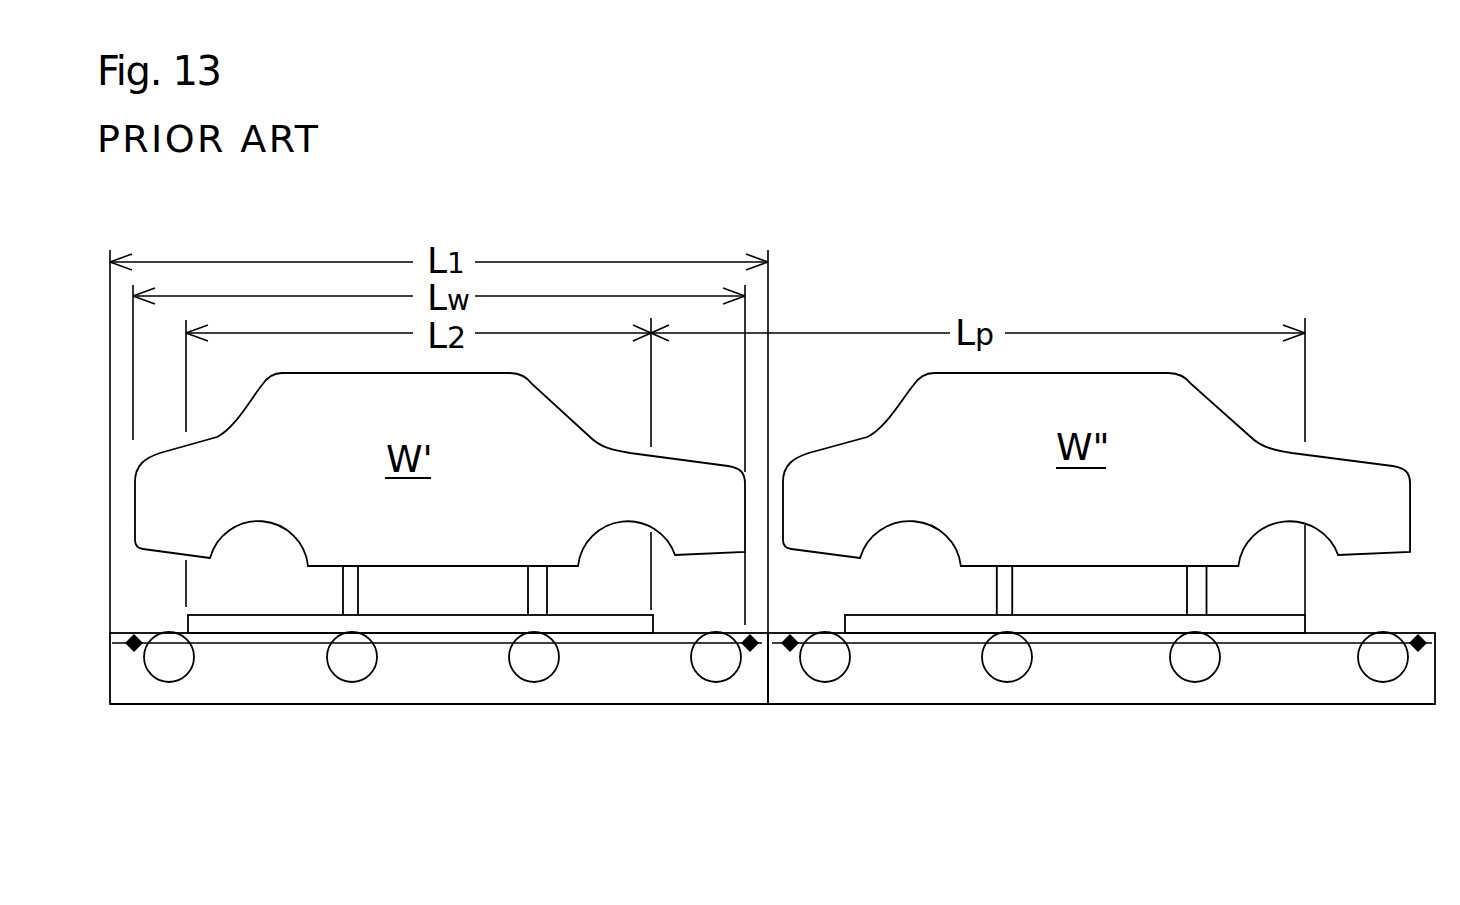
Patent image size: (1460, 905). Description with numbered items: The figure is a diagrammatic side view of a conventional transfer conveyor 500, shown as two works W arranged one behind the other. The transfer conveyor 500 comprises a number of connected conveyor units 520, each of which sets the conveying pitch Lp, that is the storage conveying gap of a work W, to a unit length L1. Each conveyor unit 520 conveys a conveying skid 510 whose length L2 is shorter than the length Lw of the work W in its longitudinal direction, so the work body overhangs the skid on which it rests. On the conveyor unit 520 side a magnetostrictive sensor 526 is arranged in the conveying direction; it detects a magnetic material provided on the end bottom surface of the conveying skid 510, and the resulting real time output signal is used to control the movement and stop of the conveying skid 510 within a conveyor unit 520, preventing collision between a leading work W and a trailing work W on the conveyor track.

The transfer conveyor 500 is at (768, 716).
The conveying skid 510 is at (431, 623).
The conveyor unit 520 is at (253, 683).
The magnetostrictive sensor 526 is at (627, 645).